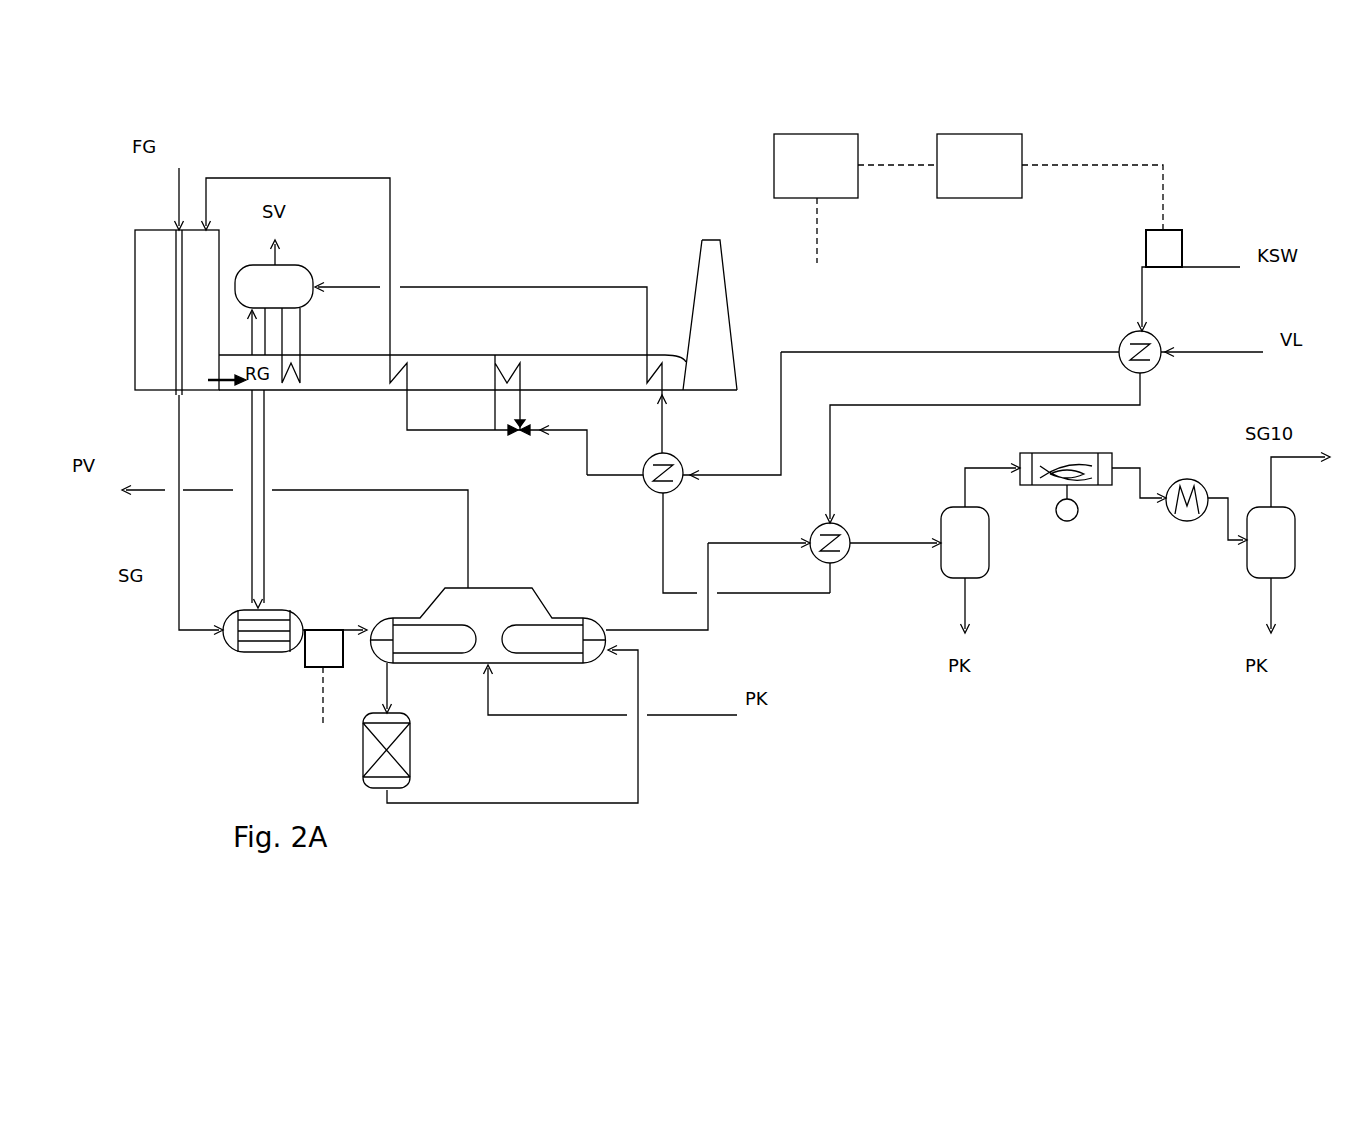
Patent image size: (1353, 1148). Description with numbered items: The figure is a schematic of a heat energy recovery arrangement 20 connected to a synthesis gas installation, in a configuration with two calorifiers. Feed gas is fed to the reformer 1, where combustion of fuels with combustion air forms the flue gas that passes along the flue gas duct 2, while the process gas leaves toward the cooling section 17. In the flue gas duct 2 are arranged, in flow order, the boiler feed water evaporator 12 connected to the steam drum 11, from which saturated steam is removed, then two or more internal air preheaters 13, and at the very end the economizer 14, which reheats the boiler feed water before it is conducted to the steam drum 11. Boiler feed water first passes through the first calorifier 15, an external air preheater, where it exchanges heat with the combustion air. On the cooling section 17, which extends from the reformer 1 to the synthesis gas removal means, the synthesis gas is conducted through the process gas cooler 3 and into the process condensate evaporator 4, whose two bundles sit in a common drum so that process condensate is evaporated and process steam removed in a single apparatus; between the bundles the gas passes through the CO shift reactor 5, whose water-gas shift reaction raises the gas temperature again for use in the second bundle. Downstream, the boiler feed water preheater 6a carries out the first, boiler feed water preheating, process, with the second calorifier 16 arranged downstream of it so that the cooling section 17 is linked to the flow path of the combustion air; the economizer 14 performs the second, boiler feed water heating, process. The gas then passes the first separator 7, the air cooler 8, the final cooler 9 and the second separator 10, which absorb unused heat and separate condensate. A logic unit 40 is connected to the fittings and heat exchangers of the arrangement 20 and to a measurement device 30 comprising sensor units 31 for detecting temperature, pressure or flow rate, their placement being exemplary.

The reformer 1 is at (177, 312).
The flue gas duct 2 is at (478, 315).
The process gas cooler 3 is at (295, 521).
The PK evaporator 4 is at (429, 645).
The CO shift reactor 5 is at (394, 750).
The KSW preheater 6a is at (824, 548).
The first separator 7 is at (980, 549).
The air cooler 8 is at (1093, 487).
The final cooler 9 is at (1206, 504).
The second separator 10 is at (1288, 543).
The steam drum 11 is at (441, 297).
The KSW evaporator 12 is at (302, 345).
The internal air preheater 13 is at (488, 415).
The economizer 14 is at (664, 404).
The first calorifier 15 is at (1022, 422).
The second calorifier 16 is at (708, 472).
The cooling section 17 is at (252, 689).
The heat energy recovery arrangement 20 is at (542, 217).
The measurement device 30 is at (1010, 182).
The sensor unit 31 is at (743, 478).
The logic unit 40 is at (816, 198).